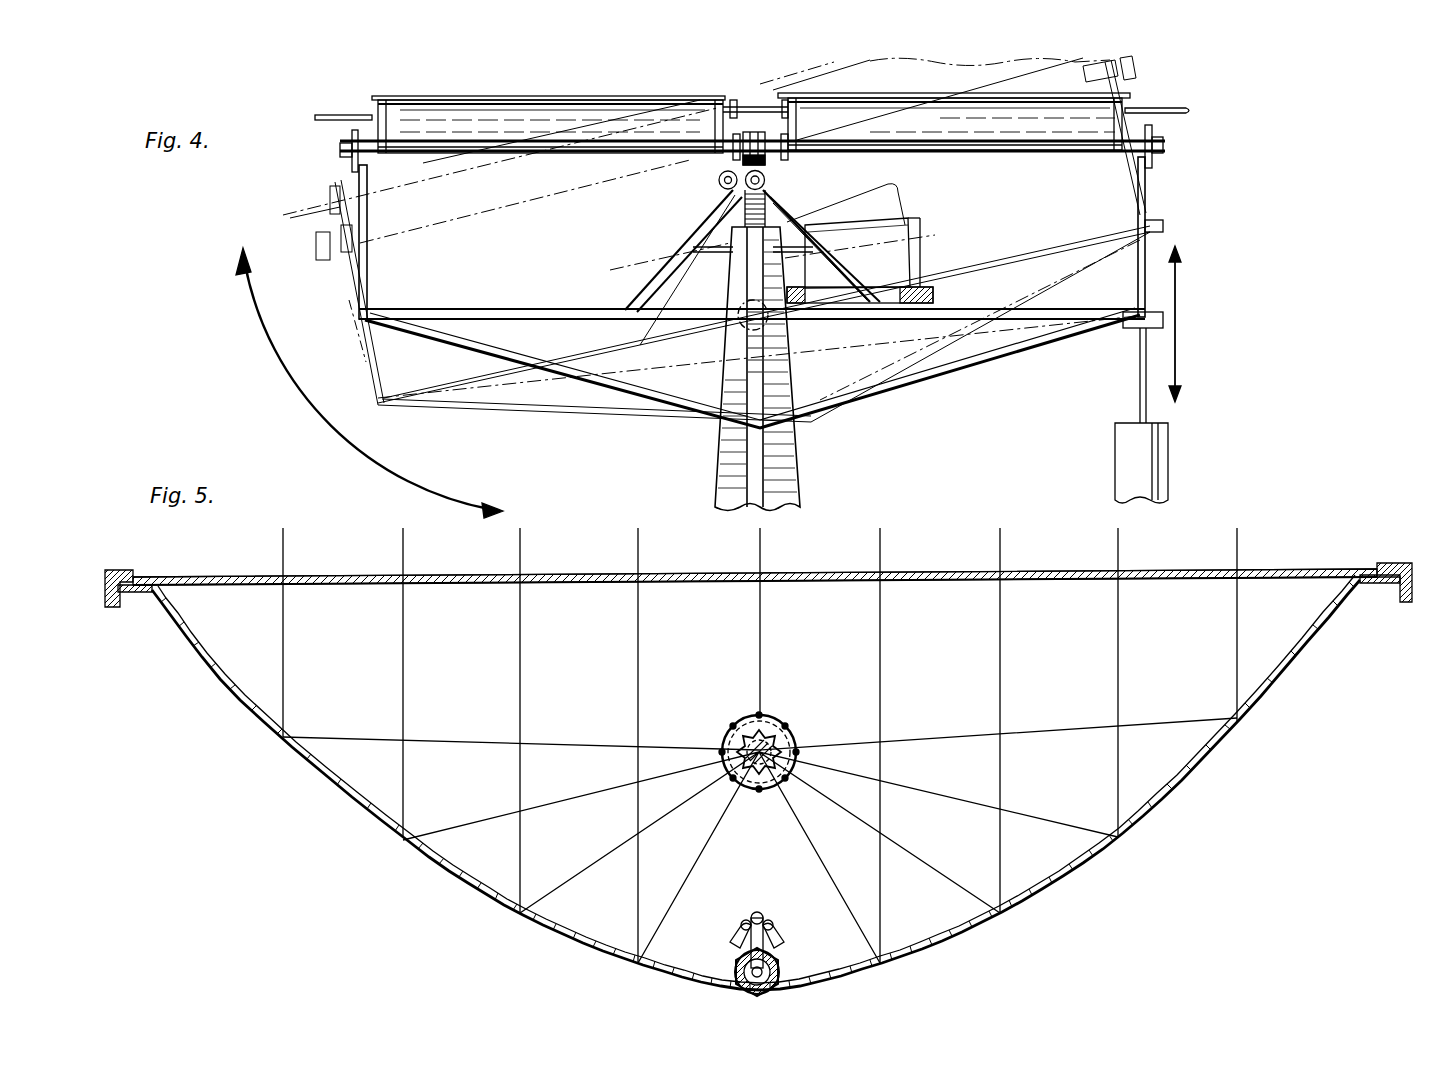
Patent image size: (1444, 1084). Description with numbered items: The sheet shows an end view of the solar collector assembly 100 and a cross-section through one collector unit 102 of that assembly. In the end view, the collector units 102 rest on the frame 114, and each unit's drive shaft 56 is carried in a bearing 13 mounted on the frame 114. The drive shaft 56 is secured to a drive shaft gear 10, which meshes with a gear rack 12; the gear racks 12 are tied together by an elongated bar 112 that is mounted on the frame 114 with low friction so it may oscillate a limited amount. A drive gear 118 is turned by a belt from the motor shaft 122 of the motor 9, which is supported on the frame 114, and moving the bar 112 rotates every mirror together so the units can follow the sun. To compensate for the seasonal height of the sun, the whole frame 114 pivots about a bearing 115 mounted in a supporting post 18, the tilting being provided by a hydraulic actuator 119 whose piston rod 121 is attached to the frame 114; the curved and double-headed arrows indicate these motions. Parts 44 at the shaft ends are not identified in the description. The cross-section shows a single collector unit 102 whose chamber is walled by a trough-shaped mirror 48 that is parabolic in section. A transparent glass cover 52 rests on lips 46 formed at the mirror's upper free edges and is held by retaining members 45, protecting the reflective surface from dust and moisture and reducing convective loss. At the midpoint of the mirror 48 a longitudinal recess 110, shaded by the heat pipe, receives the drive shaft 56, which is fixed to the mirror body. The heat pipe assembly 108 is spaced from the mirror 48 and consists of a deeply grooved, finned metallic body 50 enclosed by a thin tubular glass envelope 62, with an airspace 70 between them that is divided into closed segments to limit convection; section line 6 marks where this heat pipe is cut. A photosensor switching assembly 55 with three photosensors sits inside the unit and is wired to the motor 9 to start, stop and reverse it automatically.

In FIG. 4, the motor 9 is at (890, 240).
In FIG. 4, the drive shaft gear 10 is at (719, 182).
In FIG. 4, the gear rack 12 is at (770, 162).
In FIG. 4, the bearing 13 is at (350, 140).
In FIG. 4, the supporting post 18 is at (790, 455).
In FIG. 4, the shaft 44 is at (375, 110).
In FIG. 5, the retaining member 45 is at (120, 570).
In FIG. 5, the lips 46 is at (135, 594).
In FIG. 5, the trough-shaped mirror 48 is at (345, 797).
In FIG. 5, the metallic body 50 is at (796, 743).
In FIG. 5, the transparent cover 52 is at (1080, 575).
In FIG. 5, the photosensor switching assembly 55 is at (770, 918).
In FIG. 4, the drive shaft 56 is at (556, 155).
In FIG. 5, the drive shaft 56 is at (780, 965).
In FIG. 5, the envelope 62 is at (722, 745).
In FIG. 5, the airspace 70 is at (745, 722).
In FIG. 4, the assembly 100 is at (1222, 106).
In FIG. 4, the collector unit 102 is at (503, 160).
In FIG. 5, the collector unit 102 is at (1262, 565).
In FIG. 5, the heat pipe assembly 108 is at (788, 720).
In FIG. 5, the longitudinal recess 110 is at (735, 965).
In FIG. 4, the elongated bar 112 is at (765, 186).
In FIG. 4, the frame 114 is at (1147, 192).
In FIG. 4, the bearing 115 is at (740, 322).
In FIG. 4, the drive gear 118 is at (710, 205).
In FIG. 4, the hydraulic actuator 119 is at (1125, 435).
In FIG. 4, the piston rod 121 is at (1138, 375).
In FIG. 4, the motor shaft 122 is at (773, 250).
In FIG. 5, the section line 6 is at (840, 692).